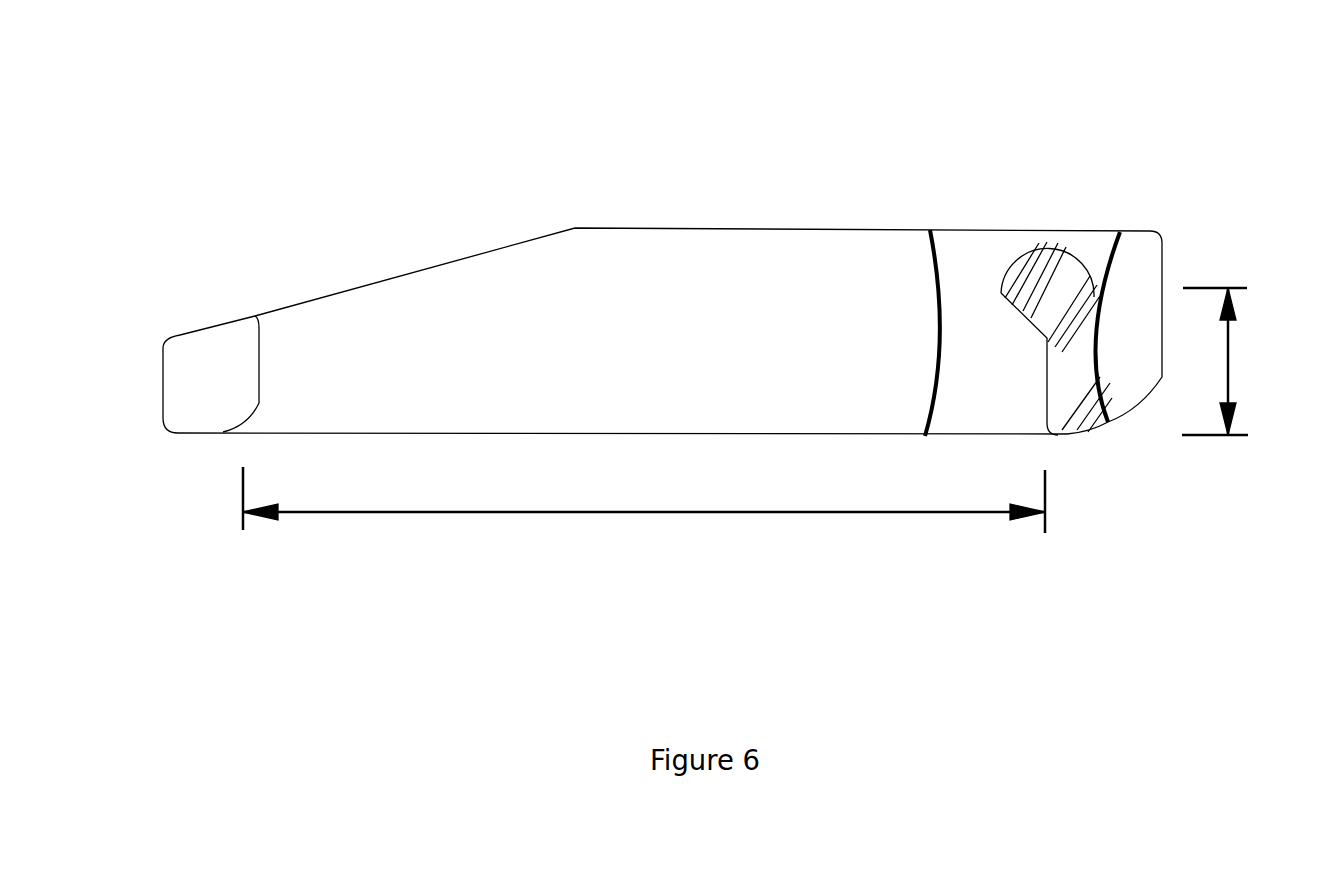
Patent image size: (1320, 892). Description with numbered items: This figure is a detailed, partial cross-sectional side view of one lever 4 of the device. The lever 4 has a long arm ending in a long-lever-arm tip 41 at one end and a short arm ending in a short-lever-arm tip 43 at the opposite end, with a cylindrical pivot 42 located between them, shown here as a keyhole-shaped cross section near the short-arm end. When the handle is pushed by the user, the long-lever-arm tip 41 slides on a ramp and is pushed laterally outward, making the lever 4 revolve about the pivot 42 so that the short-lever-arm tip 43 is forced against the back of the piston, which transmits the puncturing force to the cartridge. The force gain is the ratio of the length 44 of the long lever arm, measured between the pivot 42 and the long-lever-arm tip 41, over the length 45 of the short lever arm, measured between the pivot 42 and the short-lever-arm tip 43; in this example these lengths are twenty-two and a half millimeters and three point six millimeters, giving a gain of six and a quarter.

The lever 4 is at (372, 285).
The long-lever-arm tip 41 is at (241, 425).
The cylindrical pivot 42 is at (1025, 243).
The short-lever-arm tip 43 is at (1052, 436).
The length of the long lever arm 44 is at (1045, 515).
The length of the short lever arm 45 is at (1228, 288).